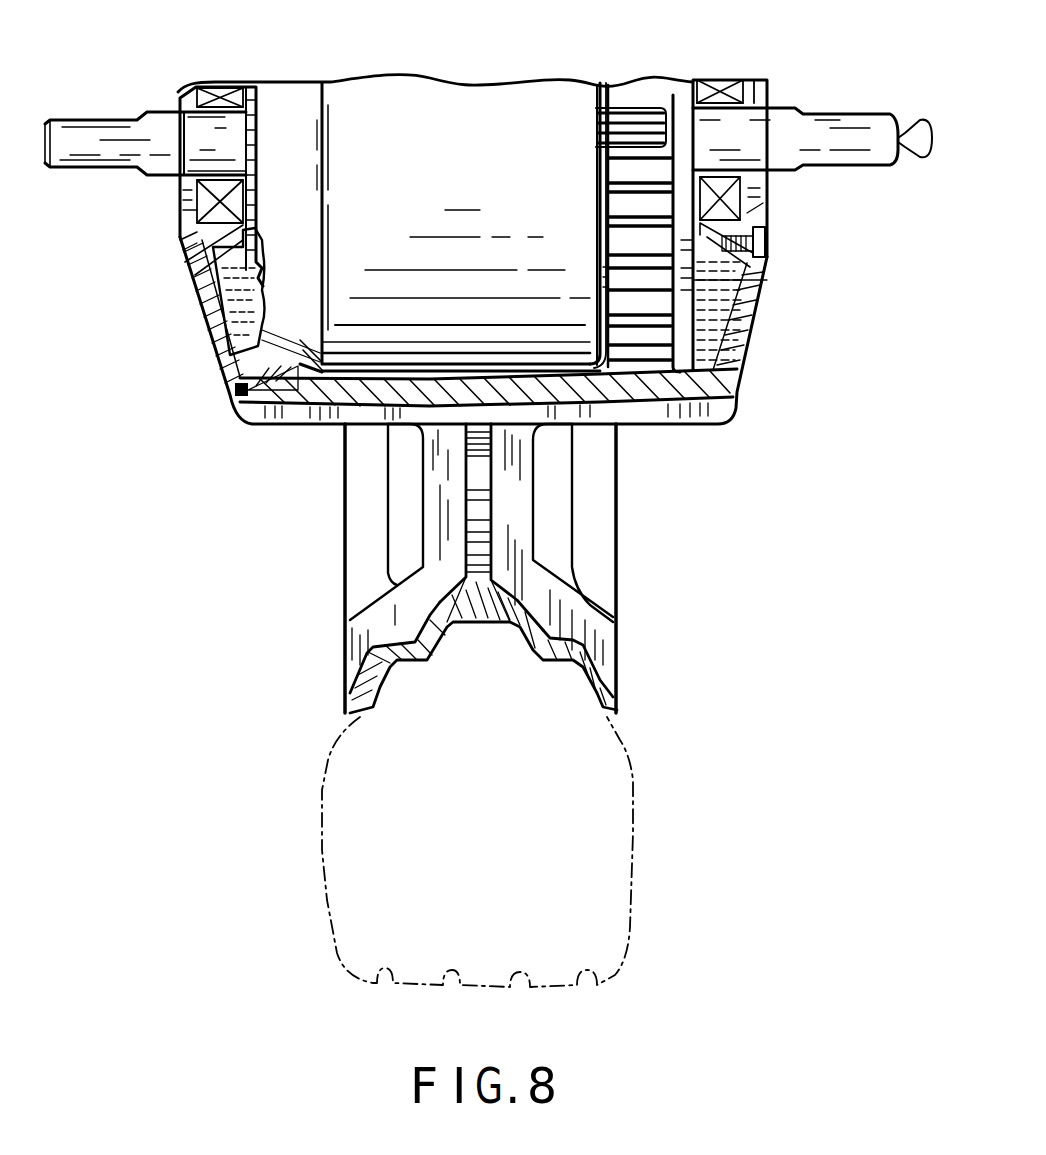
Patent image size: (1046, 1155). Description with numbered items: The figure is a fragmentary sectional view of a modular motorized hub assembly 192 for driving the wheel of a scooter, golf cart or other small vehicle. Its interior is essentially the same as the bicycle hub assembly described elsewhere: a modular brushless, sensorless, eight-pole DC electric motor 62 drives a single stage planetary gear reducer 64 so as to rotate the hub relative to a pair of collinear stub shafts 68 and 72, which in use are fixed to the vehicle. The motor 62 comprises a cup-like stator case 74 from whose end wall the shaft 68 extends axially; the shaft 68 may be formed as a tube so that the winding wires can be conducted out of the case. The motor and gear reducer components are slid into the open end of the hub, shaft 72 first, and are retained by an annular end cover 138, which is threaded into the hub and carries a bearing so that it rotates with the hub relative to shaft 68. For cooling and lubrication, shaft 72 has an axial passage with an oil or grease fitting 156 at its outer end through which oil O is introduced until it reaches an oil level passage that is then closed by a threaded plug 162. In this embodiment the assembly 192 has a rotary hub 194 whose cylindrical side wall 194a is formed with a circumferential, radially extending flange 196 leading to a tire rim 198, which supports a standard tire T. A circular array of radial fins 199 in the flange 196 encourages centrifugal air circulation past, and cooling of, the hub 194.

The modular motorized hub assembly 192 is at (168, 80).
The stator case 74 is at (354, 98).
The electric motor 62 is at (471, 72).
The single stage planetary gear reducer 64 is at (628, 70).
The oil or grease fitting 156 is at (922, 123).
The stub shaft 68 is at (93, 152).
The stub shaft 72 is at (848, 152).
The threaded plug 162 is at (770, 243).
The oil O is at (197, 307).
The annular end cover 138 is at (212, 345).
The rotary hub 194 is at (733, 343).
The cylindrical side wall 194a is at (653, 428).
The flange 196 is at (482, 517).
The radial fins 199 is at (433, 563).
The tire rim 198 is at (557, 660).
The tire T is at (633, 797).